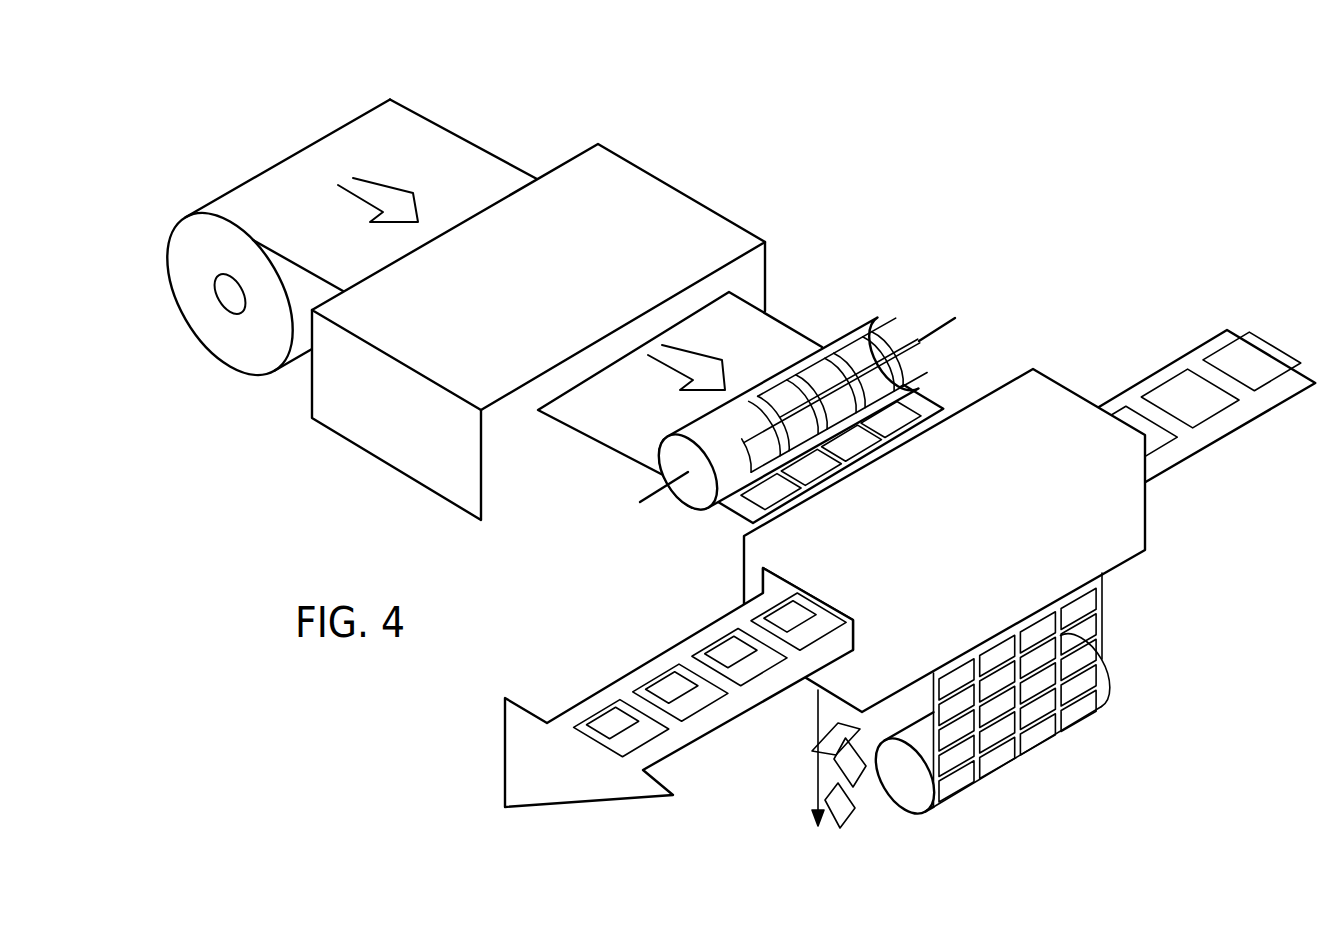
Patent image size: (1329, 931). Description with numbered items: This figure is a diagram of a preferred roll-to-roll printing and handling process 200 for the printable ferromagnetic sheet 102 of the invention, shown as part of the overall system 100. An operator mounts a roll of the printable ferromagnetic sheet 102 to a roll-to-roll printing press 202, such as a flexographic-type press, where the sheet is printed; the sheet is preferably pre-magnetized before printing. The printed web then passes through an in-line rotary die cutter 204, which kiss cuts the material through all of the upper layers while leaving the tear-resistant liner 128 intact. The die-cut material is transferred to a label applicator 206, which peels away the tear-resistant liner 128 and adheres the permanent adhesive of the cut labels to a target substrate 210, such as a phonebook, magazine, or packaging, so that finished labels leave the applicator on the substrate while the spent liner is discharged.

The label production system 100 is at (256, 120).
The roll-to-roll printing and handling process 200 is at (200, 163).
The printable ferromagnetic sheet 102 is at (235, 371).
The roll-to-roll printing press 202 is at (663, 181).
The in-line rotary die cutter 204 is at (879, 315).
The label applicator 206 is at (1146, 531).
The target substrate 210 is at (1231, 353).
The tear-resistant liner 128 is at (852, 817).